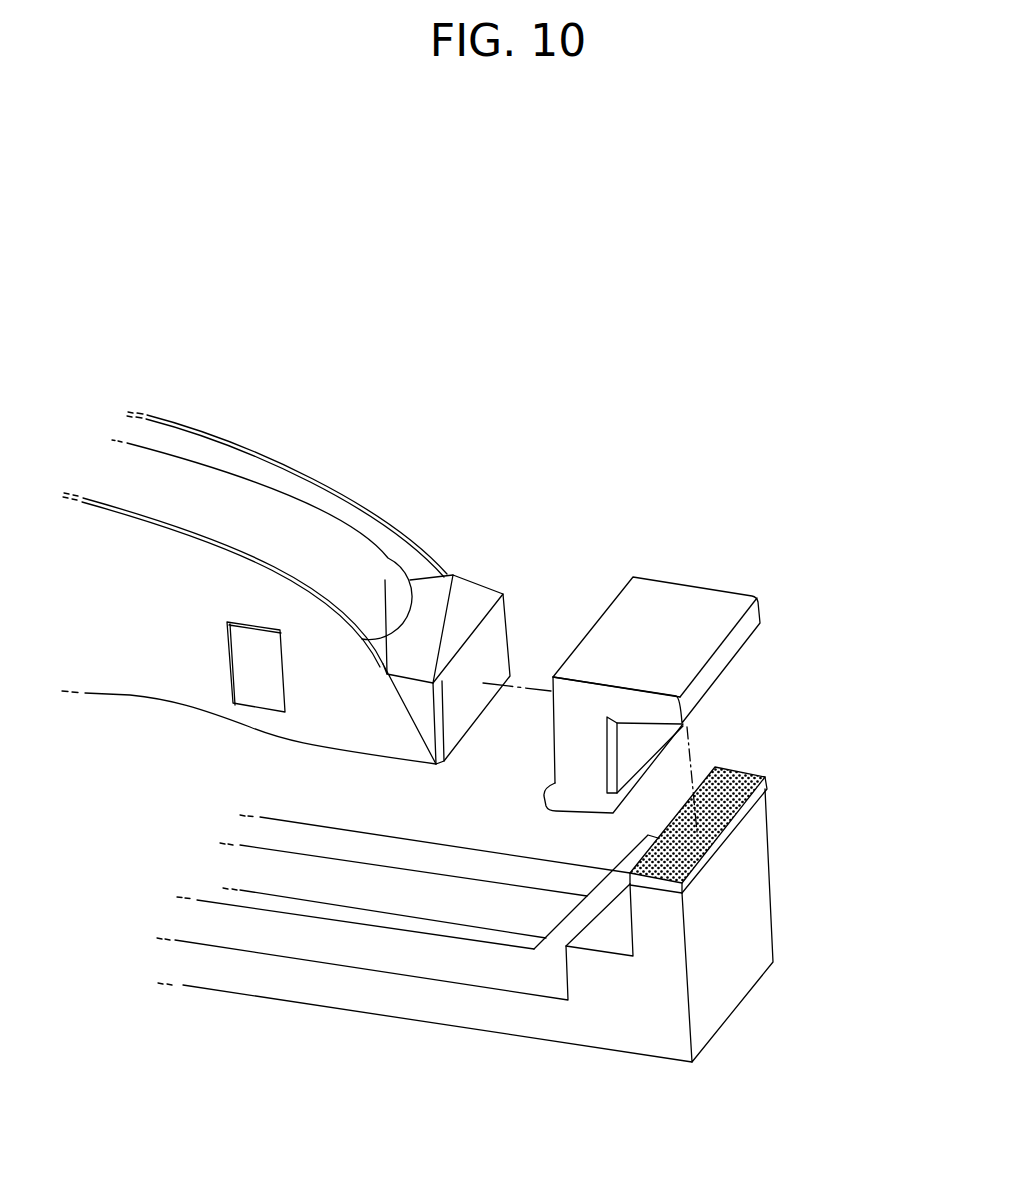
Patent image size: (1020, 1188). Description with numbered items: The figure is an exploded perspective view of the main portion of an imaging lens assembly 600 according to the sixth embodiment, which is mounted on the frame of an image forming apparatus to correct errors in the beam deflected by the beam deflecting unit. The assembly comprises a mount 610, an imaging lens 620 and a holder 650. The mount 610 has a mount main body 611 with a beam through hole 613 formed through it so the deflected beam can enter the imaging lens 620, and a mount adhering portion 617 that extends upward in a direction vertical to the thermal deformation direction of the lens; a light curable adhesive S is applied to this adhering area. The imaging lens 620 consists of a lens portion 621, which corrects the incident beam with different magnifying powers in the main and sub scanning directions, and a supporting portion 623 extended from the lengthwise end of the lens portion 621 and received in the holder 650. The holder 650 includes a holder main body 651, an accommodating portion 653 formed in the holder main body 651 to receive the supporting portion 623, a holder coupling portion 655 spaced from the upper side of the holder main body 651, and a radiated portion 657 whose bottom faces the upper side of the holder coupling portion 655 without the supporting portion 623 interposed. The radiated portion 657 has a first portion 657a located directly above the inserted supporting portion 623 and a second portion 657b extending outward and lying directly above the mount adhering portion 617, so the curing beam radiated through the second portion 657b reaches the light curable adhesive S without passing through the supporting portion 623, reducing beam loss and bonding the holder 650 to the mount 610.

The imaging lens assembly 600 is at (624, 376).
The mount 610 is at (772, 1000).
The mount main body 611 is at (433, 1003).
The beam through hole 613 is at (312, 907).
The mount adhering portion 617 is at (741, 818).
The light curable adhesive S is at (742, 775).
The imaging lens 620 is at (322, 438).
The lens portion 621 is at (155, 560).
The supporting portion 623 is at (497, 635).
The holder 650 is at (786, 588).
The holder main body 651 is at (568, 752).
The accommodating portion 653 is at (630, 758).
The holder coupling portion 655 is at (747, 652).
The radiated portion 657 is at (648, 478).
The first portion 657a is at (645, 587).
The second portion 657b is at (731, 607).